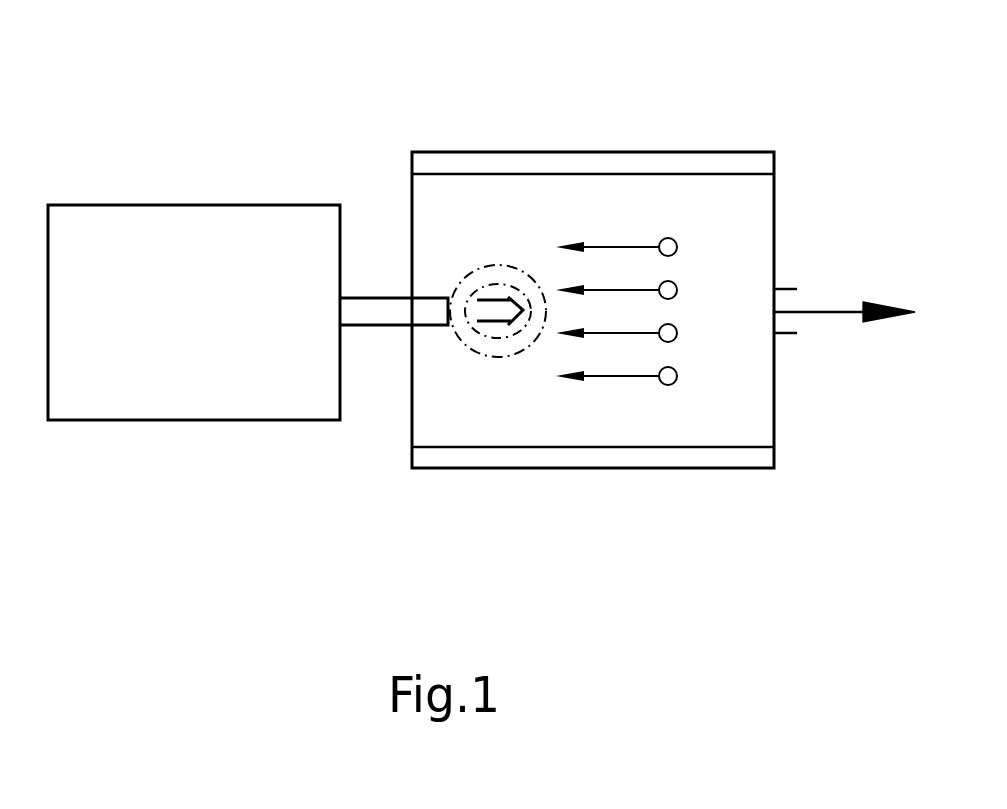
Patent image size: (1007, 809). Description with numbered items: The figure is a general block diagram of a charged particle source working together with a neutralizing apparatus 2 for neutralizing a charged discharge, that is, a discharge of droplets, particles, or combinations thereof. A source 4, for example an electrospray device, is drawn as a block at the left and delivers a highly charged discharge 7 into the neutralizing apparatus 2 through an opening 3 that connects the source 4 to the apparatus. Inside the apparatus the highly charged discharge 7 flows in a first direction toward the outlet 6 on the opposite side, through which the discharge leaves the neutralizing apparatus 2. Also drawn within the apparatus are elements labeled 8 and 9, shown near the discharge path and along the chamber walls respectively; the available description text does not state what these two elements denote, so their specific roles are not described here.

The neutralizing apparatus 2 is at (636, 118).
The opening 3 is at (412, 298).
The source 4 is at (99, 420).
The outlet 6 is at (817, 310).
The highly charged discharge 7 is at (482, 283).
The particles / sputtered species 8 is at (626, 415).
The chamber walls 9 is at (758, 160).